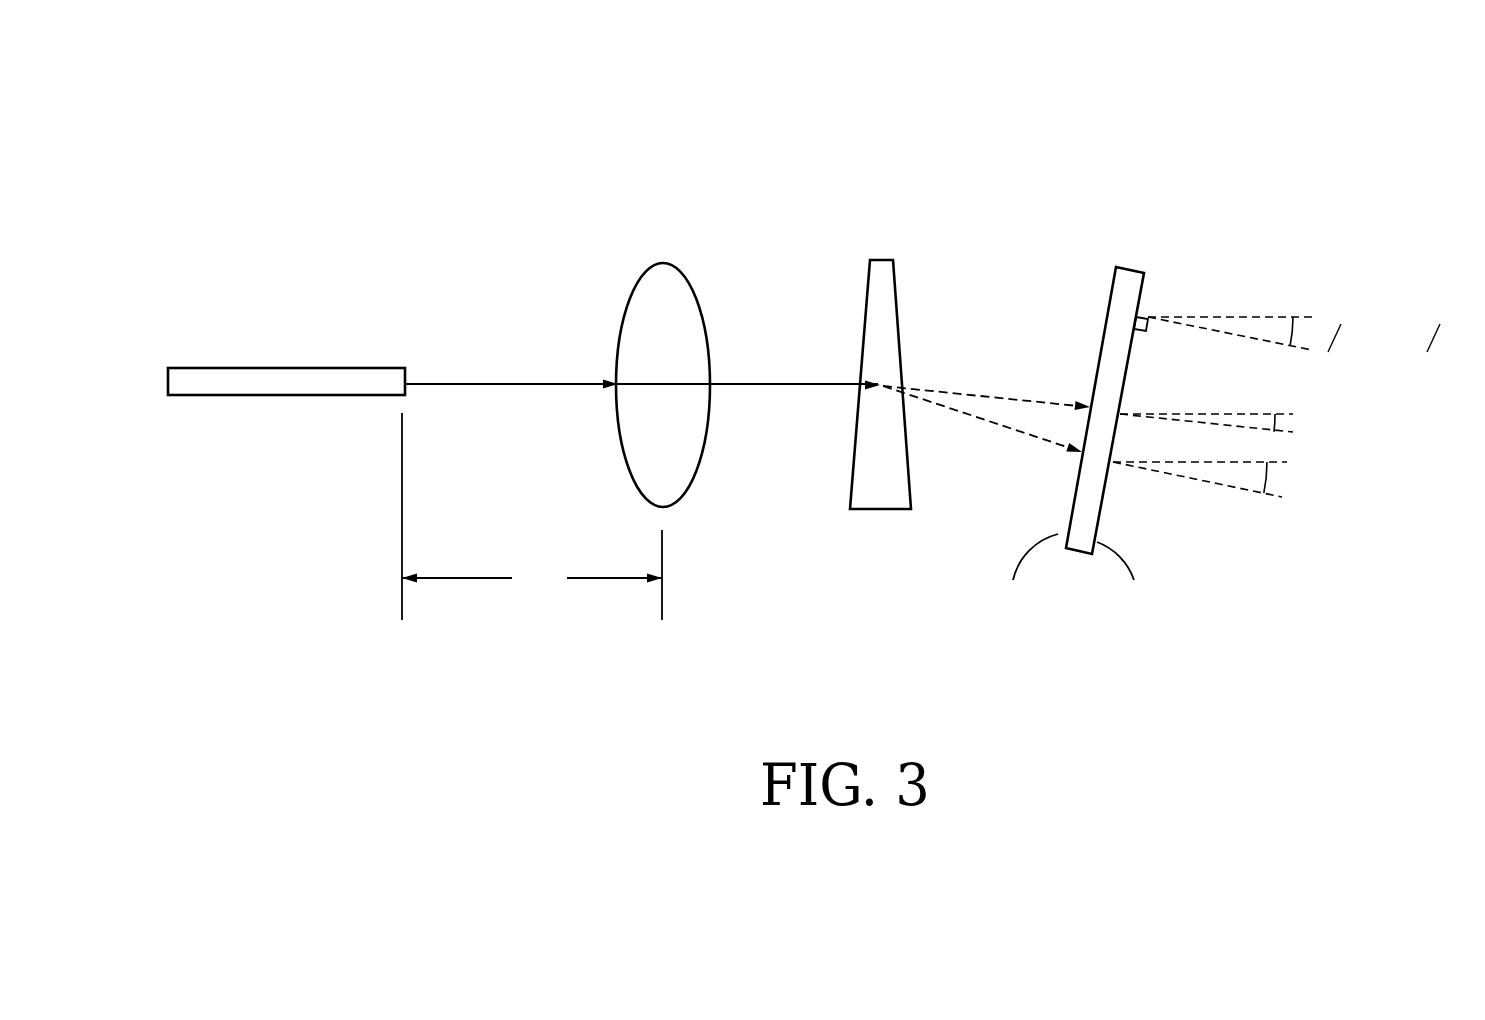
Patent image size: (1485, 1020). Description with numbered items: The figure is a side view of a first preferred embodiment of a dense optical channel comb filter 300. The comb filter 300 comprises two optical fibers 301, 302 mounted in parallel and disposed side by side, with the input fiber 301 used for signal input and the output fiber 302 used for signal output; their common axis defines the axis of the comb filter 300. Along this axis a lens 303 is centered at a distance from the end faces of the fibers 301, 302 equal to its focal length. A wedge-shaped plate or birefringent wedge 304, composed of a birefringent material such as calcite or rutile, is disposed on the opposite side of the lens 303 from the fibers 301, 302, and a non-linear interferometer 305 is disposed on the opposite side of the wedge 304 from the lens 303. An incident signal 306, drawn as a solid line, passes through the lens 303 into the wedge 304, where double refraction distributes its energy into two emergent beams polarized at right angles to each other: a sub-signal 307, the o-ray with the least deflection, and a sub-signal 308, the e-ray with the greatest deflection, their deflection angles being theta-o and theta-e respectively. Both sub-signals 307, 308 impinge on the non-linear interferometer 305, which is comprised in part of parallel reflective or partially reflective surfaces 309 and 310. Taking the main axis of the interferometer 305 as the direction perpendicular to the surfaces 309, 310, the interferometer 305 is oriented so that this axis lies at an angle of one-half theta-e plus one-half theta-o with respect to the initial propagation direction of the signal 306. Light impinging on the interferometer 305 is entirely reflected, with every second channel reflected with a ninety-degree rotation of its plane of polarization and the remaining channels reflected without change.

The comb filter 300 is at (740, 48).
The input fiber 301 is at (329, 329).
The output fiber 302 is at (305, 368).
The lens 303 is at (665, 263).
The birefringent wedge 304 is at (883, 260).
The non-linear interferometer 305 is at (1128, 267).
The signal 306 is at (508, 386).
The sub-signal 307 is at (978, 397).
The sub-signal 308 is at (997, 425).
The reflective surface 309 is at (1025, 578).
The reflective surface 310 is at (1125, 582).